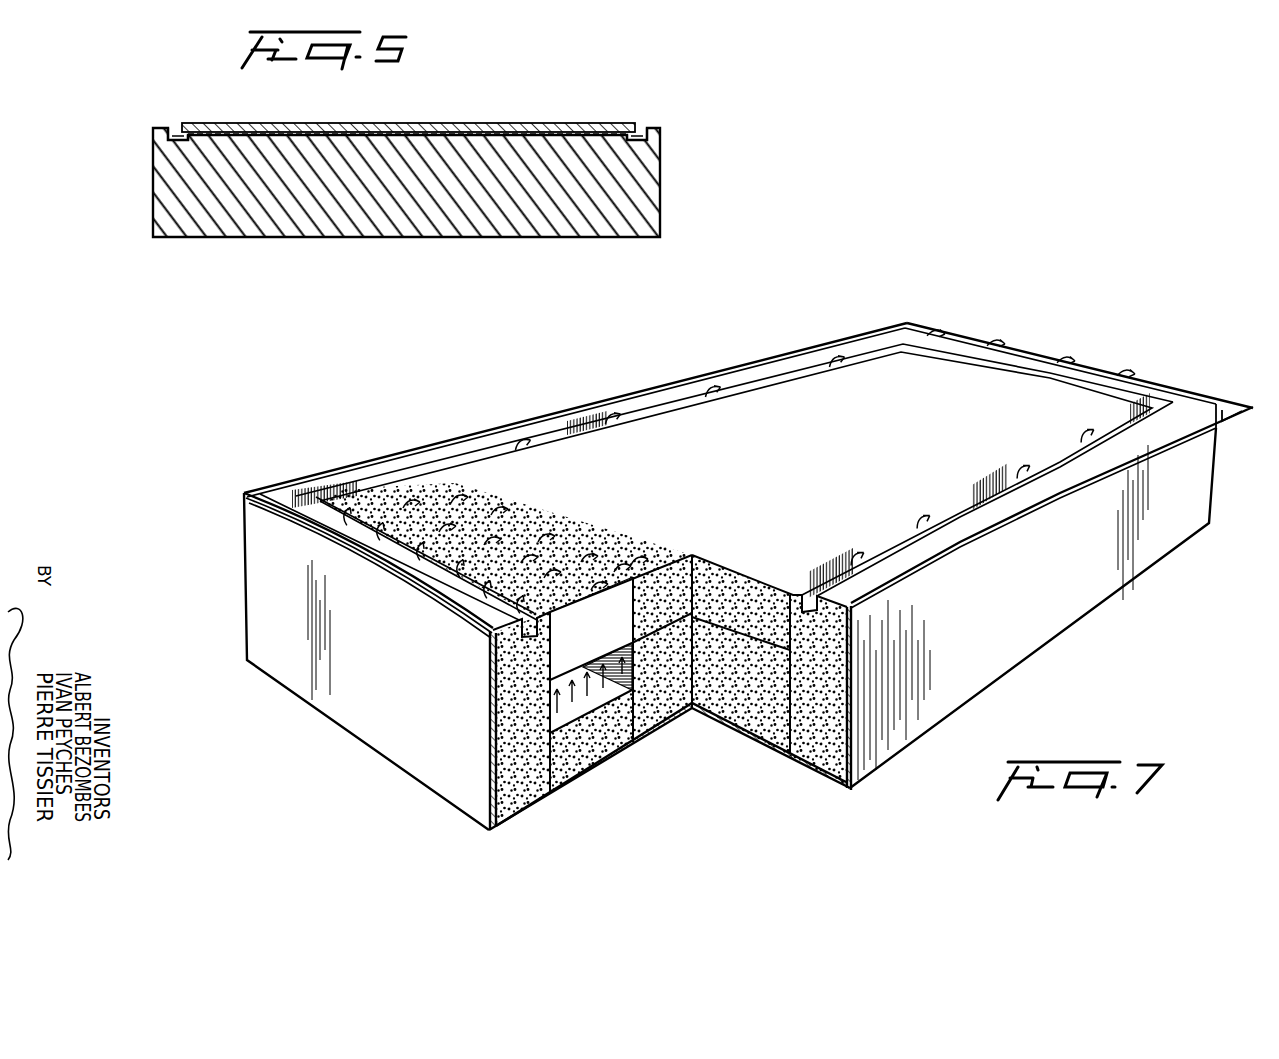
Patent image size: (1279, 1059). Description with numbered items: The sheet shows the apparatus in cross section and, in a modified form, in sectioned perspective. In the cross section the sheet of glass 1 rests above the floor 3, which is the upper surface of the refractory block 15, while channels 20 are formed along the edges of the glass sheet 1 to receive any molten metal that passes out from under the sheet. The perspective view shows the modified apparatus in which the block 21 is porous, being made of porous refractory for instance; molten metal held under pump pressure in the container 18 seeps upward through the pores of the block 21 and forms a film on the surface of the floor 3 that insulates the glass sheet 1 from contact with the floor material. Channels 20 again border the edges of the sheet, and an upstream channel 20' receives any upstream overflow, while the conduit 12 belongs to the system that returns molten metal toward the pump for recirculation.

In FIG. 5, the sheet of glass 1 is at (522, 130).
In FIG. 5, the floor 3 is at (528, 133).
In FIG. 7, the floor 3 is at (800, 457).
In FIG. 7, the conduit 12 is at (1220, 418).
In FIG. 5, the refractory block 15 is at (412, 220).
In FIG. 7, the container 18 is at (580, 700).
In FIG. 5, the channels 20 is at (408, 110).
In FIG. 7, the channels 20 is at (990, 506).
In FIG. 7, the channel 20' is at (397, 569).
In FIG. 7, the block 21 is at (593, 600).